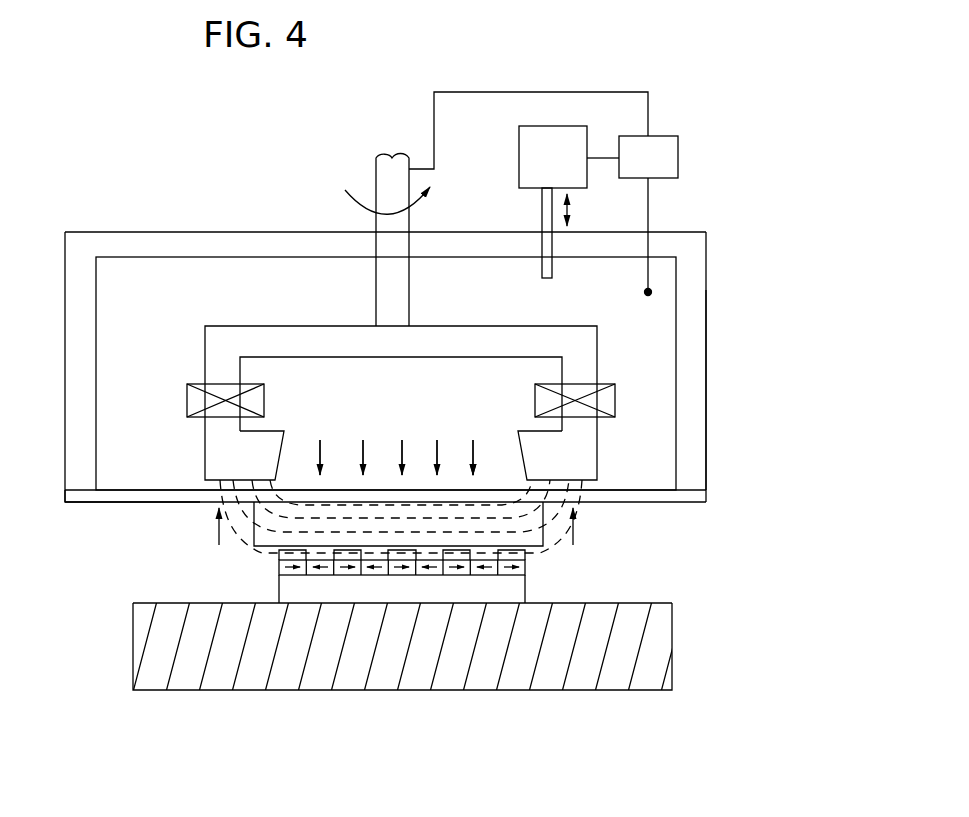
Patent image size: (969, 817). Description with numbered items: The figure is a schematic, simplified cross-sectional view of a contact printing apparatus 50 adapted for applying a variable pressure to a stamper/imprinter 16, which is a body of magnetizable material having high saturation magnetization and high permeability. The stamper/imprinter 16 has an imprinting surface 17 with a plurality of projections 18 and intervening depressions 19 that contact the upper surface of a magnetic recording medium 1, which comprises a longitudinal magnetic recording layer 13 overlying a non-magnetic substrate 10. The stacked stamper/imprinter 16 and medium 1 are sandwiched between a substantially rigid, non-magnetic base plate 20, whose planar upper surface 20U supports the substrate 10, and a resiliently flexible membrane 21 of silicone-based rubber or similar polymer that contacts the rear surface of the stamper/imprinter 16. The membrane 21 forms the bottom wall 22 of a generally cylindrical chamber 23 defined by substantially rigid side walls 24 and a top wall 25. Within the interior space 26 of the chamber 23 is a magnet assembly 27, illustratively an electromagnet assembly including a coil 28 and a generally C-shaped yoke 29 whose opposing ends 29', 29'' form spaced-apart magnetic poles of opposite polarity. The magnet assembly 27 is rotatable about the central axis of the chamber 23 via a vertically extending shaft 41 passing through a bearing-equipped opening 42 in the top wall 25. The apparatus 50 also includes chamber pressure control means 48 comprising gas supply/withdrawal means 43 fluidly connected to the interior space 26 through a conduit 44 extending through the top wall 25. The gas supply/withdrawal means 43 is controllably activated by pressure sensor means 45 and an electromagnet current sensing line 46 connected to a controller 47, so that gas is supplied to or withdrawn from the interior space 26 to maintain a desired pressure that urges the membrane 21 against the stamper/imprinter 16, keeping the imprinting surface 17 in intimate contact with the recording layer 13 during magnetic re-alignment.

The magnetic recording medium 1 is at (632, 578).
The non-magnetic substrate 10 is at (387, 600).
The longitudinal magnetic recording layer 13 is at (525, 568).
The stamper/imprinter 16 is at (250, 538).
The imprinting surface 17 is at (255, 562).
The projections 18 is at (322, 560).
The depressions 19 is at (542, 552).
The base plate 20 is at (673, 660).
The planar upper surface 20U is at (653, 603).
The resiliently flexible membrane 21 is at (675, 508).
The bottom wall 22 is at (108, 502).
The chamber 23 is at (720, 330).
The side walls 24 is at (706, 423).
The top wall 25 is at (128, 232).
The interior space 26 is at (132, 323).
The magnet assembly 27 is at (267, 340).
The coil 28 is at (616, 394).
The C-shaped yoke 29 is at (451, 372).
The yoke end 29' is at (275, 438).
The yoke end 29'' is at (533, 433).
The vertically extending shaft 41 is at (376, 183).
The bearing-equipped opening 42 is at (409, 228).
The gas supply/withdrawal means 43 is at (539, 170).
The conduit 44 is at (542, 272).
The pressure sensor means 45 is at (650, 290).
The electromagnet power sensing line 46 is at (648, 100).
The controller 47 is at (635, 170).
The chamber pressure control means 48 is at (690, 148).
The contact printing apparatus 50 is at (178, 128).